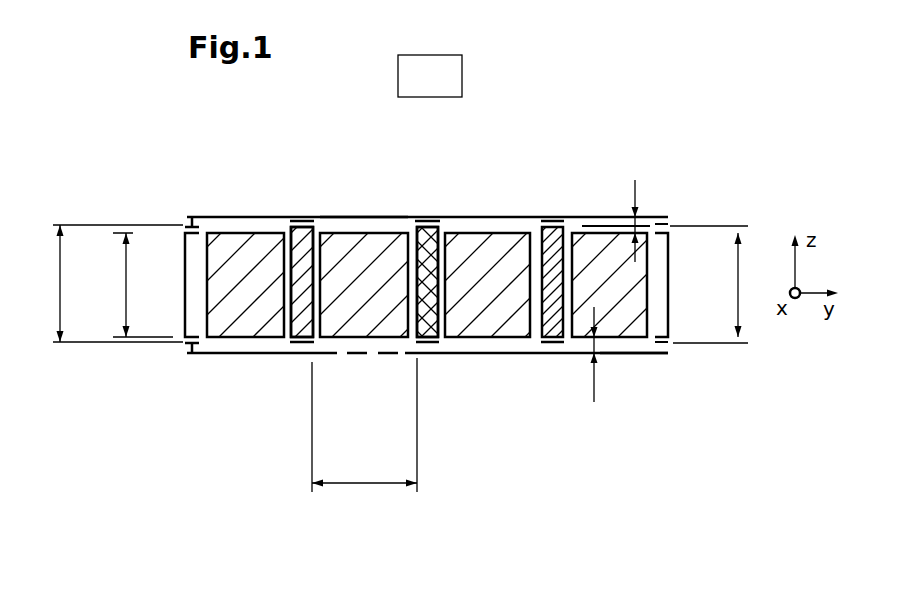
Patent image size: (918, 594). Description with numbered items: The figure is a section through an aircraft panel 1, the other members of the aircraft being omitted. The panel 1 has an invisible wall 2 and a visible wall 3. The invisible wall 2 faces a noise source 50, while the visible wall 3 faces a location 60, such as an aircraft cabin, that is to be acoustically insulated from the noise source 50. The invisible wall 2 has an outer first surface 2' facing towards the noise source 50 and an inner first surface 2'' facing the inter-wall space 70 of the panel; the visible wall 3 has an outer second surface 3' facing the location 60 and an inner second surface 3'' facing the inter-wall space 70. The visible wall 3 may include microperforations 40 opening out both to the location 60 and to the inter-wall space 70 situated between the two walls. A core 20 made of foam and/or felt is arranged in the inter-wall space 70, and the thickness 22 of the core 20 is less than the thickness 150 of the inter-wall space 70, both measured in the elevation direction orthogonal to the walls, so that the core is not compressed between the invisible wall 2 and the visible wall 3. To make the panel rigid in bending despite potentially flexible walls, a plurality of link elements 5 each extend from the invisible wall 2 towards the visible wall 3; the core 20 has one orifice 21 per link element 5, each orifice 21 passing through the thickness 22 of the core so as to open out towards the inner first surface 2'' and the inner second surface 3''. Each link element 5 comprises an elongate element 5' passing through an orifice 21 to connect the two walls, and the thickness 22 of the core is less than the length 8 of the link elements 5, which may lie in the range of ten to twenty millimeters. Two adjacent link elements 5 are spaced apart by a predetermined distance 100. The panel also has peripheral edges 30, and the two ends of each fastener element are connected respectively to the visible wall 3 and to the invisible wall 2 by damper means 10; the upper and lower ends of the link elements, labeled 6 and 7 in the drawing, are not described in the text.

The panel 1 is at (712, 178).
The invisible wall 2 is at (427, 175).
The outer first surface 2' is at (564, 218).
The inner first surface 2'' is at (373, 208).
The visible wall 3 is at (262, 381).
The outer second surface 3' is at (654, 400).
The inner second surface 3'' is at (507, 363).
The link element 5 is at (302, 282).
The elongate element 5' is at (427, 282).
The spacer upper end 6 is at (292, 229).
The spacer lower end 7 is at (301, 345).
The length of the link elements 8 is at (714, 284).
The damper means 10 is at (192, 217).
The core 20 is at (633, 278).
The orifice 21 is at (291, 340).
The thickness of the core 22 is at (133, 285).
The peripheral edges 30 is at (185, 268).
The microperforations 40 is at (348, 416).
The noise source 50 is at (443, 87).
The location 60 is at (443, 537).
The inter-wall space 70 is at (201, 253).
The predetermined distance 100 is at (364, 425).
The thickness of the inter-wall space 150 is at (96, 283).